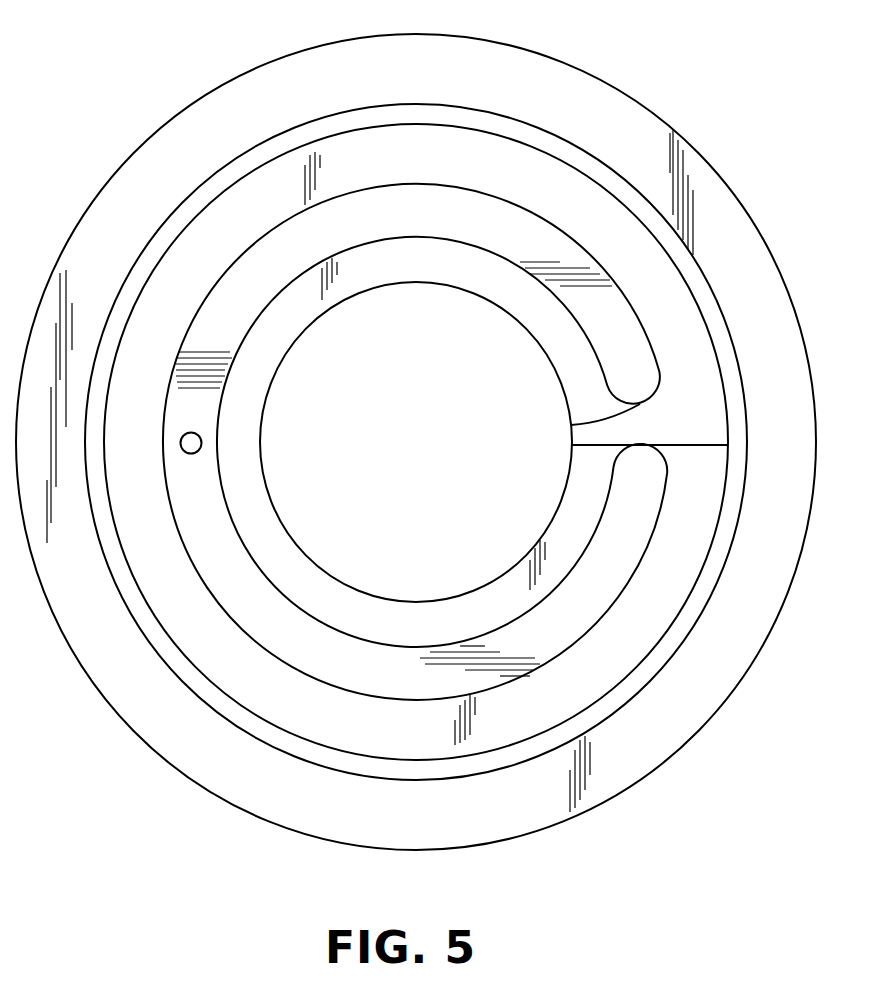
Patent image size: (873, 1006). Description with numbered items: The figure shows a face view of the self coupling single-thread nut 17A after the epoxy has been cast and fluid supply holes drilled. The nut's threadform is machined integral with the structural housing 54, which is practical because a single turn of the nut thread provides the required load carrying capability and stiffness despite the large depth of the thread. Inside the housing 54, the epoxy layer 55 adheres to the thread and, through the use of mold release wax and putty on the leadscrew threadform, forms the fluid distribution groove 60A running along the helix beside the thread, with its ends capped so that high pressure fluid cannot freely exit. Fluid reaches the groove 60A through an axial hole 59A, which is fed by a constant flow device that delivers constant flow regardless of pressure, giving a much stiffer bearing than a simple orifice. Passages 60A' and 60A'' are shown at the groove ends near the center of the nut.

The single-thread nut 17A is at (176, 772).
The structural housing 54 is at (210, 129).
The epoxy layer 55 is at (185, 194).
The fluid distribution groove 60A is at (346, 439).
The axial hole 59A is at (200, 440).
The groove branch passage 60A' is at (561, 413).
The radial passage 60A'' is at (694, 417).